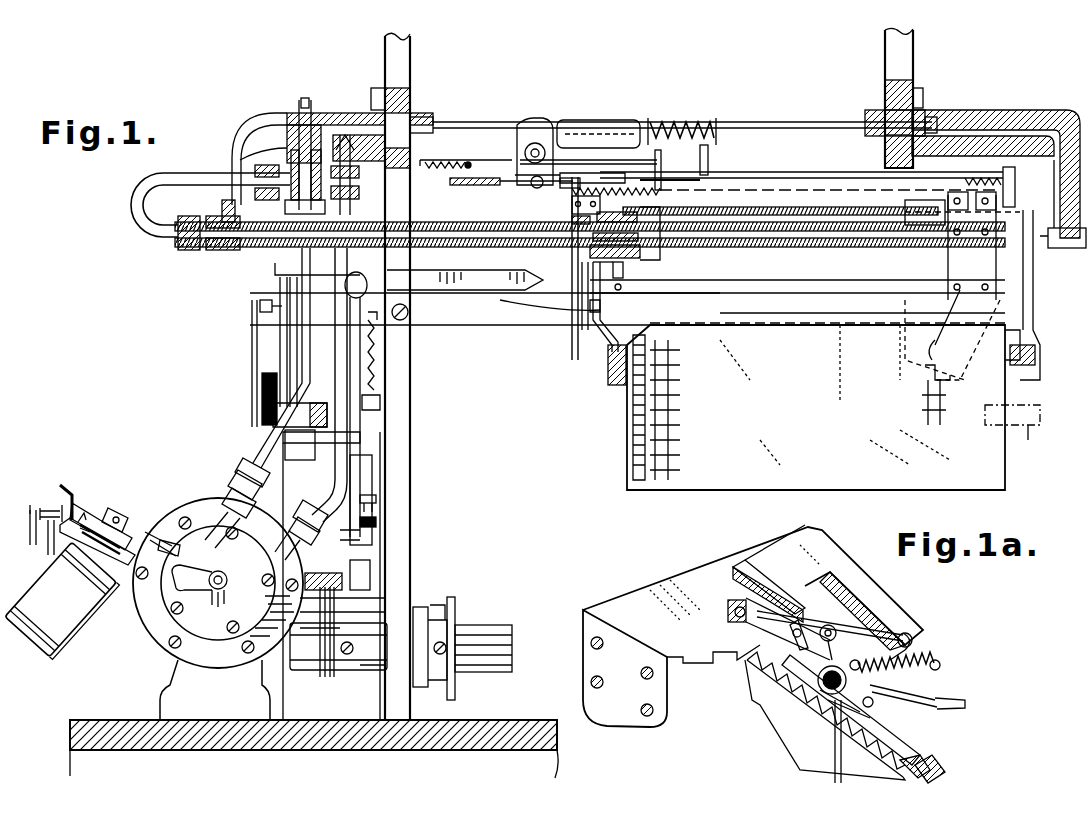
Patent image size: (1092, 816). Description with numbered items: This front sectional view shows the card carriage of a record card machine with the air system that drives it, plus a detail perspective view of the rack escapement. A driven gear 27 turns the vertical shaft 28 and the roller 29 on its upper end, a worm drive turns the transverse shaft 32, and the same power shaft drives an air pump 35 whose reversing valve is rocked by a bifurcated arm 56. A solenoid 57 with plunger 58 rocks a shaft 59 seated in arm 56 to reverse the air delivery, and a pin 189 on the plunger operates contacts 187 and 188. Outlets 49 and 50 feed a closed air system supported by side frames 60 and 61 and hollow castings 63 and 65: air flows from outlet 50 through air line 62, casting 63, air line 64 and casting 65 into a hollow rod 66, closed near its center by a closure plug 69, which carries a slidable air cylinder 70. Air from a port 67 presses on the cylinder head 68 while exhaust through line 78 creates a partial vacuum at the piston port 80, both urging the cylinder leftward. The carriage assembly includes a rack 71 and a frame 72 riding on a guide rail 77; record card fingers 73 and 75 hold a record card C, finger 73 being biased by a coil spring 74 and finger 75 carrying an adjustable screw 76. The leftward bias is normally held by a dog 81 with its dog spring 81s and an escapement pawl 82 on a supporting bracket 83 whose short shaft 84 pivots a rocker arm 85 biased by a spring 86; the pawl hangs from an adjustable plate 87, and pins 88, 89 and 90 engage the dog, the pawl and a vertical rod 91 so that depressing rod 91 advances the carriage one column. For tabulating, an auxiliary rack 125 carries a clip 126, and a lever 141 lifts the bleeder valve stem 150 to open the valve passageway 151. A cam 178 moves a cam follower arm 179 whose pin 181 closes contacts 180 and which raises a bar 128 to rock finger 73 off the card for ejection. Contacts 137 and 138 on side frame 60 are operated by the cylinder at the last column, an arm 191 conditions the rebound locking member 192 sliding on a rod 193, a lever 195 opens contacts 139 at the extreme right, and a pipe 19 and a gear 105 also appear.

In FIG. 1, the pipe 19 is at (182, 180).
In FIG. 1, the gear 27 is at (343, 580).
In FIG. 1, the vertical shaft 28 is at (297, 494).
In FIG. 1, the roller 29 is at (316, 392).
In FIG. 1, the transverse shaft 32 is at (352, 666).
In FIG. 1, the air pump 35 is at (195, 492).
In FIG. 1, the outlet 49 is at (228, 505).
In FIG. 1, the outlet 50 is at (275, 550).
In FIG. 1, the bifurcated arm 56 is at (217, 568).
In FIG. 1, the solenoid 57 is at (88, 605).
In FIG. 1, the plunger 58 is at (114, 510).
In FIG. 1, the shaft 59 is at (160, 540).
In FIG. 1, the side frame 60 is at (411, 67).
In FIG. 1, the side frame 61 is at (885, 48).
In FIG. 1, the air line 62 is at (335, 473).
In FIG. 1, the hollow casting 63 is at (374, 100).
In FIG. 1, the air line 64 is at (495, 127).
In FIG. 1, the hollow casting 65 is at (990, 114).
In FIG. 1, the hollow rod 66 is at (795, 248).
In FIG. 1, the port 67 is at (604, 193).
In FIG. 1, the cylinder head 68 is at (572, 210).
In FIG. 1, the closure plug 69 is at (672, 246).
In FIG. 1, the air cylinder 70 is at (266, 248).
In FIG. 1, the rack 71 is at (704, 181).
In FIG. 1A, the rack 71 is at (935, 770).
In FIG. 1, the frame 72 is at (603, 306).
In FIG. 1, the record card finger 73 is at (600, 345).
In FIG. 1, the coil spring 74 is at (608, 375).
In FIG. 1, the record card finger 75 is at (1034, 350).
In FIG. 1, the adjustable screw 76 is at (1022, 386).
In FIG. 1, the guide rail 77 is at (484, 328).
In FIG. 1, the line 78 is at (262, 445).
In FIG. 1, the piston port 80 is at (623, 268).
In FIG. 1, the dog 81 is at (648, 192).
In FIG. 1A, the dog 81 is at (912, 735).
In FIG. 1A, the dog spring 81s is at (945, 672).
In FIG. 1, the escapement pawl 82 is at (548, 178).
In FIG. 1A, the escapement pawl 82 is at (736, 612).
In FIG. 1A, the supporting bracket 83 is at (612, 600).
In FIG. 1A, the short shaft 84 is at (800, 715).
In FIG. 1A, the rocker arm 85 is at (912, 630).
In FIG. 1A, the spring 86 is at (935, 652).
In FIG. 1, the adjustable plate 87 is at (537, 128).
In FIG. 1A, the pin 88 is at (828, 700).
In FIG. 1A, the pin 89 is at (790, 638).
In FIG. 1A, the pin 90 is at (822, 632).
In FIG. 1, the vertical rod 91 is at (572, 260).
In FIG. 1A, the vertical rod 91 is at (834, 756).
In FIG. 1, the gear 105 is at (492, 666).
In FIG. 1, the auxiliary rack 125 is at (710, 168).
In FIG. 1, the clip 126 is at (715, 120).
In FIG. 1, the bar 128 is at (455, 275).
In FIG. 1, the contacts 137 is at (278, 318).
In FIG. 1, the contacts 138 is at (262, 300).
In FIG. 1, the contacts 139 is at (932, 418).
In FIG. 1, the lever 141 is at (304, 98).
In FIG. 1, the bleeder valve stem 150 is at (312, 118).
In FIG. 1, the valve passageway 151 is at (283, 150).
In FIG. 1, the cam 178 is at (372, 590).
In FIG. 1, the cam follower arm 179 is at (362, 473).
In FIG. 1, the contacts 180 is at (377, 503).
In FIG. 1, the pin 181 is at (377, 522).
In FIG. 1, the contacts 187 is at (55, 492).
In FIG. 1, the contacts 188 is at (44, 510).
In FIG. 1, the pin 189 is at (75, 503).
In FIG. 1, the arm 191 is at (580, 158).
In FIG. 1, the rebound locking member 192 is at (665, 164).
In FIG. 1, the rod 193 is at (806, 170).
In FIG. 1, the lever 195 is at (968, 341).
In FIG. 1, the record card C is at (703, 492).